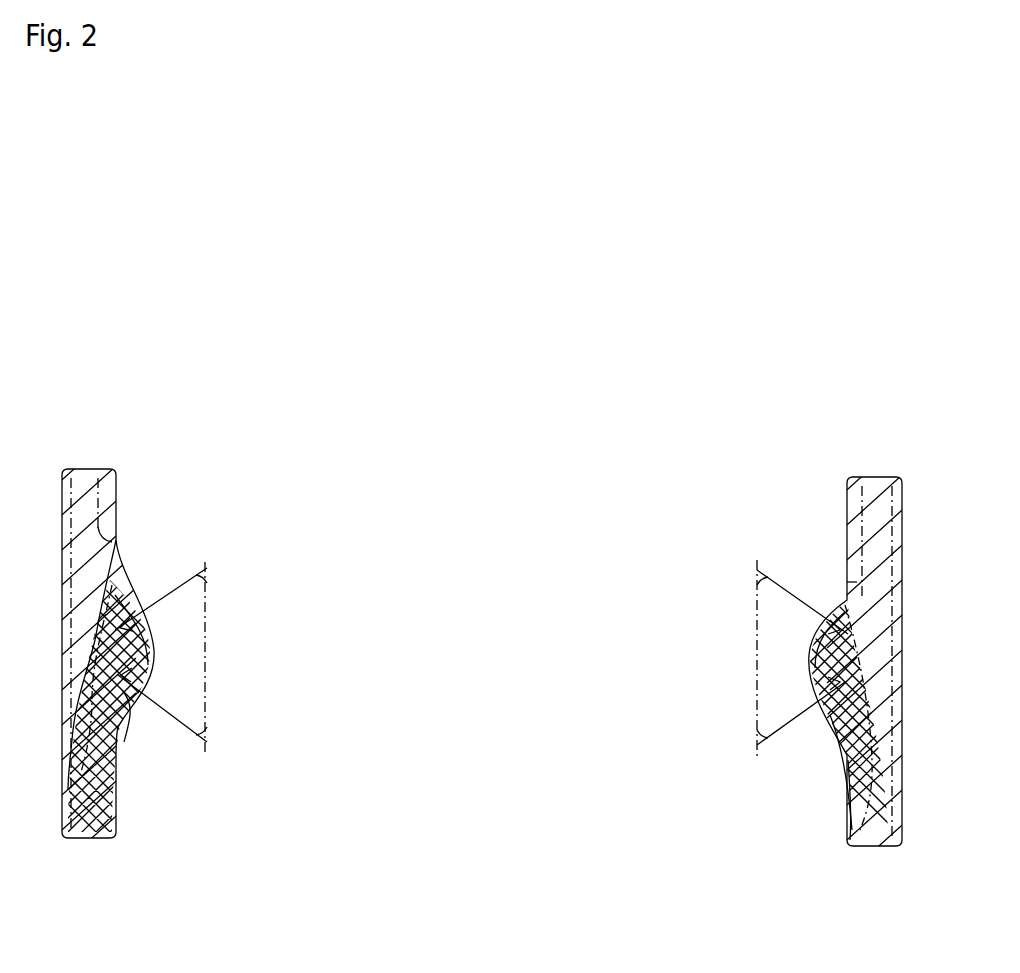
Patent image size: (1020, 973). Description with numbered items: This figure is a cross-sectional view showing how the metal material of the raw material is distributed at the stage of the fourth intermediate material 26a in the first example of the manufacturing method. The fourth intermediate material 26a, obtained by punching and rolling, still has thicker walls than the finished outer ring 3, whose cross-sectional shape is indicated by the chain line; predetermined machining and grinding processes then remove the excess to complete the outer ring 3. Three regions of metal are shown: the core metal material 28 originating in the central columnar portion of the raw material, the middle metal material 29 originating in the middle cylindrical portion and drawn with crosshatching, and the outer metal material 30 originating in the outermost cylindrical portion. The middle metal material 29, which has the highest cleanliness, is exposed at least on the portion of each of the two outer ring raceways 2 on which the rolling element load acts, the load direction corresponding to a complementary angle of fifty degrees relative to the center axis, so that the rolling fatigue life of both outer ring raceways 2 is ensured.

The fourth intermediate material 26a is at (498, 316).
The outer ring 3 is at (97, 468).
The outer ring raceway 2 is at (126, 584).
The outer metal material 30 is at (878, 492).
The middle metal material 29 is at (826, 604).
The core metal material 28 is at (848, 753).